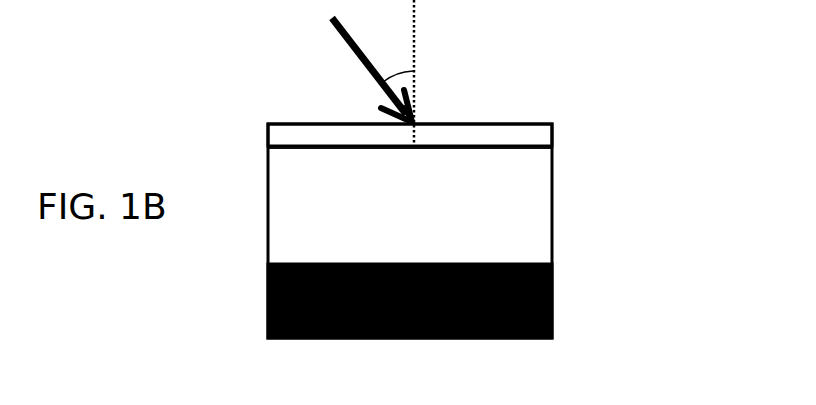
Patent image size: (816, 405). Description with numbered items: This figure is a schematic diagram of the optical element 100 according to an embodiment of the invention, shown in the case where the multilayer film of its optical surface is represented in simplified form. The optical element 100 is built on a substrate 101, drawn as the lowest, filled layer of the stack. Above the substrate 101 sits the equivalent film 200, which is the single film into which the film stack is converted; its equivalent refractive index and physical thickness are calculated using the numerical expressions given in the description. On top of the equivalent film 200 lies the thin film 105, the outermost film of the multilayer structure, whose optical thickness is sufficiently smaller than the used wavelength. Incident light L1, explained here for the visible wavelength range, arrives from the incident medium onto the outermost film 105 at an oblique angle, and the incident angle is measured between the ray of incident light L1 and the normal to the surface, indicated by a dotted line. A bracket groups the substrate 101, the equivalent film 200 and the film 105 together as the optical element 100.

The optical element 100 is at (653, 93).
The film 105 is at (556, 137).
The equivalent film 200 is at (552, 213).
The substrate 101 is at (552, 297).
The incident light L1 is at (362, 43).